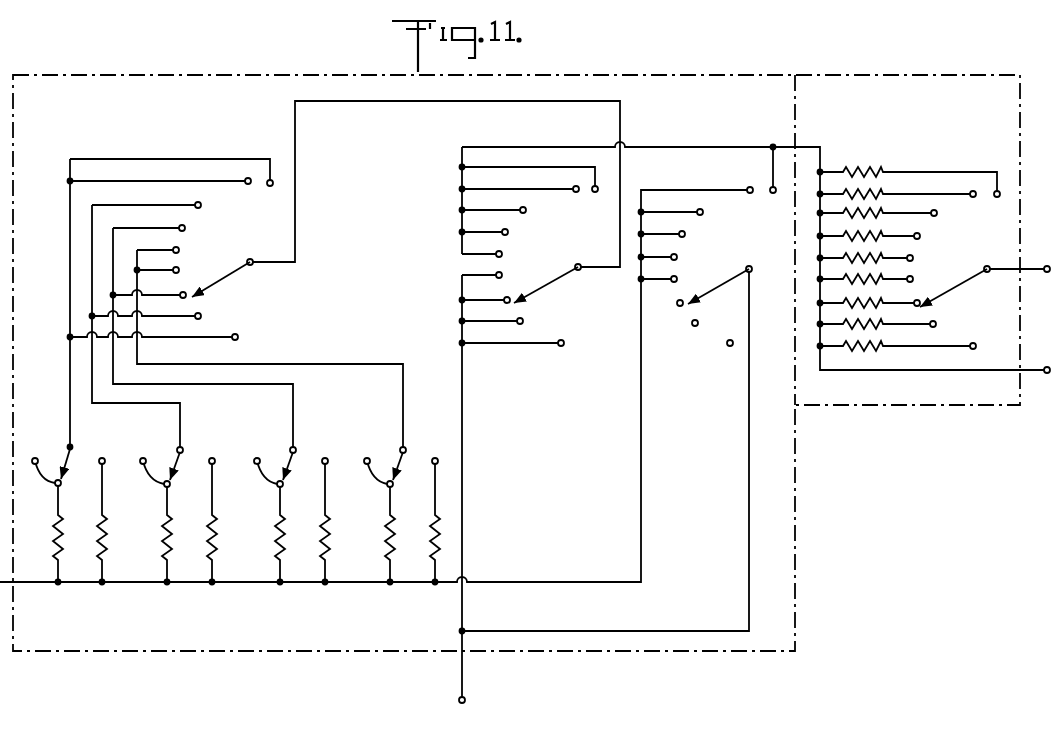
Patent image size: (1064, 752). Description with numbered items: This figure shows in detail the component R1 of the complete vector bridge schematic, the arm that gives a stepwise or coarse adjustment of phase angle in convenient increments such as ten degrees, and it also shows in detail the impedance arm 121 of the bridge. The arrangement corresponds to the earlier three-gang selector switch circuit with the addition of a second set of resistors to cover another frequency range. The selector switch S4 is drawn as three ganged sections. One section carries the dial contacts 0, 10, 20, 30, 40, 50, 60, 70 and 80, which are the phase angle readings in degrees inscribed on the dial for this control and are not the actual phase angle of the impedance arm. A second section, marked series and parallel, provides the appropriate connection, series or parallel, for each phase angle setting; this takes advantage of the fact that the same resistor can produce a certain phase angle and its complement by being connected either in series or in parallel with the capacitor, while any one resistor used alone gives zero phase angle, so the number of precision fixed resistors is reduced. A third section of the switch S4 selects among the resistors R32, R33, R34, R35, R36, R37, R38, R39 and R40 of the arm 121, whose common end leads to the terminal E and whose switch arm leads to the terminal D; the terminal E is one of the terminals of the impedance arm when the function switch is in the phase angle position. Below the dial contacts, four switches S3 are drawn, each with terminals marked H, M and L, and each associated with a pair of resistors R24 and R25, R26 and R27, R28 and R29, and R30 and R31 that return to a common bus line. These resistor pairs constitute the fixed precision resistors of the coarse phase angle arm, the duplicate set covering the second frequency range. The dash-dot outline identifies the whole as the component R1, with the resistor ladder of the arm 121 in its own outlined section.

The resistance component R1 is at (573, 659).
The impedance arm 121 is at (857, 258).
The selector switch S4 is at (558, 275).
The three-position switch S3 is at (248, 457).
The high terminal H is at (209, 463).
The low terminal L is at (273, 453).
The medium terminal M is at (233, 487).
The phase angle dial reading 0 is at (241, 332).
The phase angle dial reading 10 is at (208, 311).
The phase angle dial reading 20 is at (190, 288).
The phase angle dial reading 30 is at (186, 269).
The phase angle dial reading 40 is at (186, 249).
The phase angle dial reading 50 is at (193, 228).
The phase angle dial reading 60 is at (208, 205).
The phase angle dial reading 70 is at (249, 189).
The phase angle dial reading 80 is at (272, 192).
The resistor R24 is at (72, 535).
The resistor R25 is at (118, 524).
The resistor R26 is at (181, 536).
The resistor R27 is at (229, 524).
The resistor R28 is at (293, 536).
The resistor R29 is at (340, 524).
The resistor R30 is at (404, 536).
The resistor R31 is at (445, 524).
The resistor R32 is at (909, 176).
The resistor R33 is at (897, 188).
The resistor R34 is at (878, 207).
The resistor R35 is at (869, 230).
The resistor R36 is at (866, 252).
The resistor R37 is at (866, 273).
The resistor R38 is at (869, 297).
The resistor R39 is at (877, 318).
The resistor R40 is at (897, 340).
The terminal D is at (1047, 261).
The terminal E is at (1047, 361).